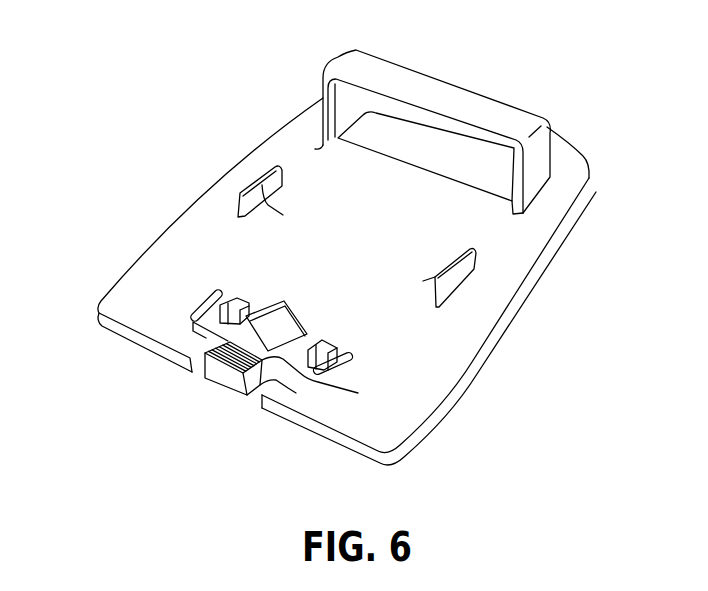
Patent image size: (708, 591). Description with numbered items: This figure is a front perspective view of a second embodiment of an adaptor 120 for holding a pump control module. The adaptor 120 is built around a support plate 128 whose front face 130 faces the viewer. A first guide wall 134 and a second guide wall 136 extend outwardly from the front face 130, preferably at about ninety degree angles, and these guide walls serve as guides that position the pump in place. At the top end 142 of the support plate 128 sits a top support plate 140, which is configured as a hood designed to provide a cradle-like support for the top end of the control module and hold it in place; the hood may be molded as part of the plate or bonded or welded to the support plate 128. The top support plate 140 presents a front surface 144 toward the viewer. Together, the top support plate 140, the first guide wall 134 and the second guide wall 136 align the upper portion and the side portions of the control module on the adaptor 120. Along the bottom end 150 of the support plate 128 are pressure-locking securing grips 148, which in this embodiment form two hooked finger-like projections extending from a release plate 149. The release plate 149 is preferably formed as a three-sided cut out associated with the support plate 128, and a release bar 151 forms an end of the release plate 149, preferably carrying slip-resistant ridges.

The adaptor 120 is at (147, 184).
The support plate 128 is at (273, 134).
The front face 130 is at (378, 237).
The first guide wall 134 is at (254, 182).
The second guide wall 136 is at (452, 282).
The top support plate 140 is at (472, 80).
The top end 142 is at (580, 149).
The front surface 144 is at (398, 75).
The pressure-locking securing grips 148 is at (191, 322).
The release plate 149 is at (246, 342).
The bottom end 150 is at (317, 433).
The release bar 151 is at (230, 389).